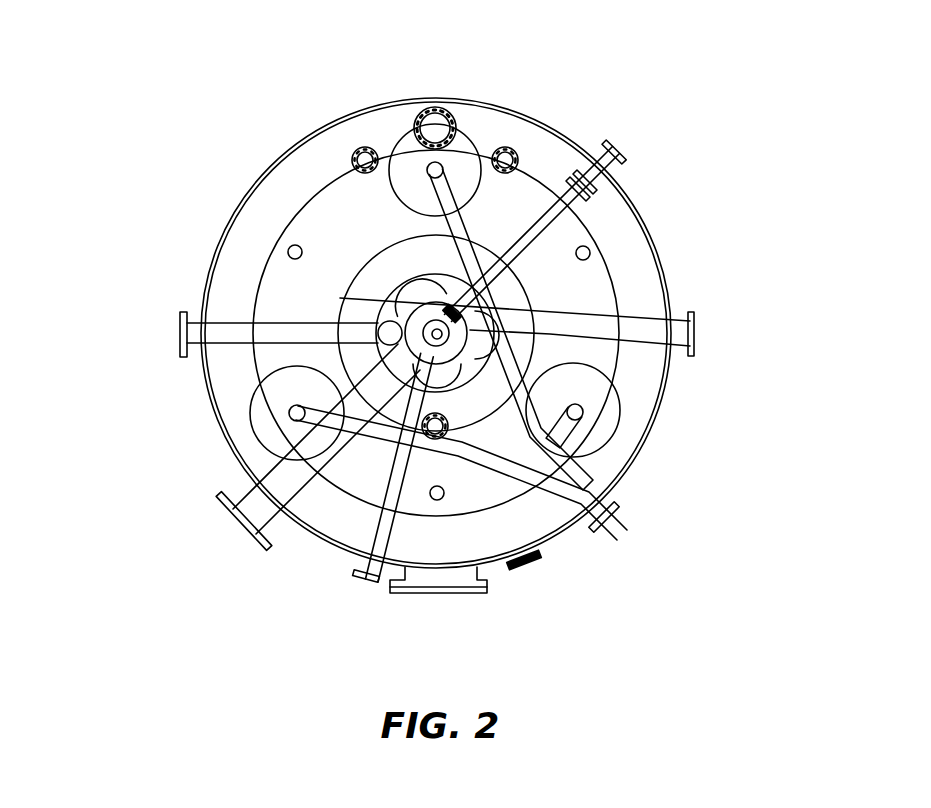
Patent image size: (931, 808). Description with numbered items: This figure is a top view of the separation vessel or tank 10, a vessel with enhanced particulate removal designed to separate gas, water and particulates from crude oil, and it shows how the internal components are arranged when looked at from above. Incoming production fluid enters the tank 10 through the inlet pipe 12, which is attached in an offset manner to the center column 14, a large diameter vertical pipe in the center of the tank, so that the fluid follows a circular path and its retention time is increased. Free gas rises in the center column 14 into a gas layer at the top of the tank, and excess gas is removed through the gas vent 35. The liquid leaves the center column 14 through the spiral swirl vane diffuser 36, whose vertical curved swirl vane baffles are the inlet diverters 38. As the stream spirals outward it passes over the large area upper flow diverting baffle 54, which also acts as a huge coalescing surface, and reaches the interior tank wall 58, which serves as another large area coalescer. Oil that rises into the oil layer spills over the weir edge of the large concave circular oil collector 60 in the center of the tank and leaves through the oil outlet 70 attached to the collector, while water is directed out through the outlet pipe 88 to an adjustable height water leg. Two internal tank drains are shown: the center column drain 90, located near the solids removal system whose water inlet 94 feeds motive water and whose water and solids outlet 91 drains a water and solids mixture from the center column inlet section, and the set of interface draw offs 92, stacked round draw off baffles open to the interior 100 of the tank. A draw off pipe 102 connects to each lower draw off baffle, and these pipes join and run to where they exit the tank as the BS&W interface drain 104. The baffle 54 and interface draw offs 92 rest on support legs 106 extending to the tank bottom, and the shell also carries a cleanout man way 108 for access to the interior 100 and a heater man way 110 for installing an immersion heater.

The separation vessel 10 is at (722, 78).
The inlet pipe 12 is at (694, 331).
The center column 14 is at (340, 298).
The gas vent 35 is at (468, 462).
The spiral swirl vane diffuser 36 is at (410, 342).
The inlet diverters 38 is at (437, 268).
The upper flow diverting baffle 54 is at (617, 292).
The interior tank wall 58 is at (636, 412).
The oil collector 60 is at (485, 262).
The oil outlet 70 is at (182, 332).
The outlet pipe 88 is at (222, 535).
The center column drain 90 is at (365, 582).
The water and solids outlet 91 is at (583, 207).
The water inlet 94 is at (614, 152).
The interface draw offs 92 is at (470, 157).
The interior 100 is at (330, 153).
The draw off pipe 102 is at (545, 358).
The BS&W interface drain 104 is at (616, 525).
The support legs 106 is at (288, 252).
The cleanout man way 108 is at (415, 596).
The heater man way 110 is at (524, 572).